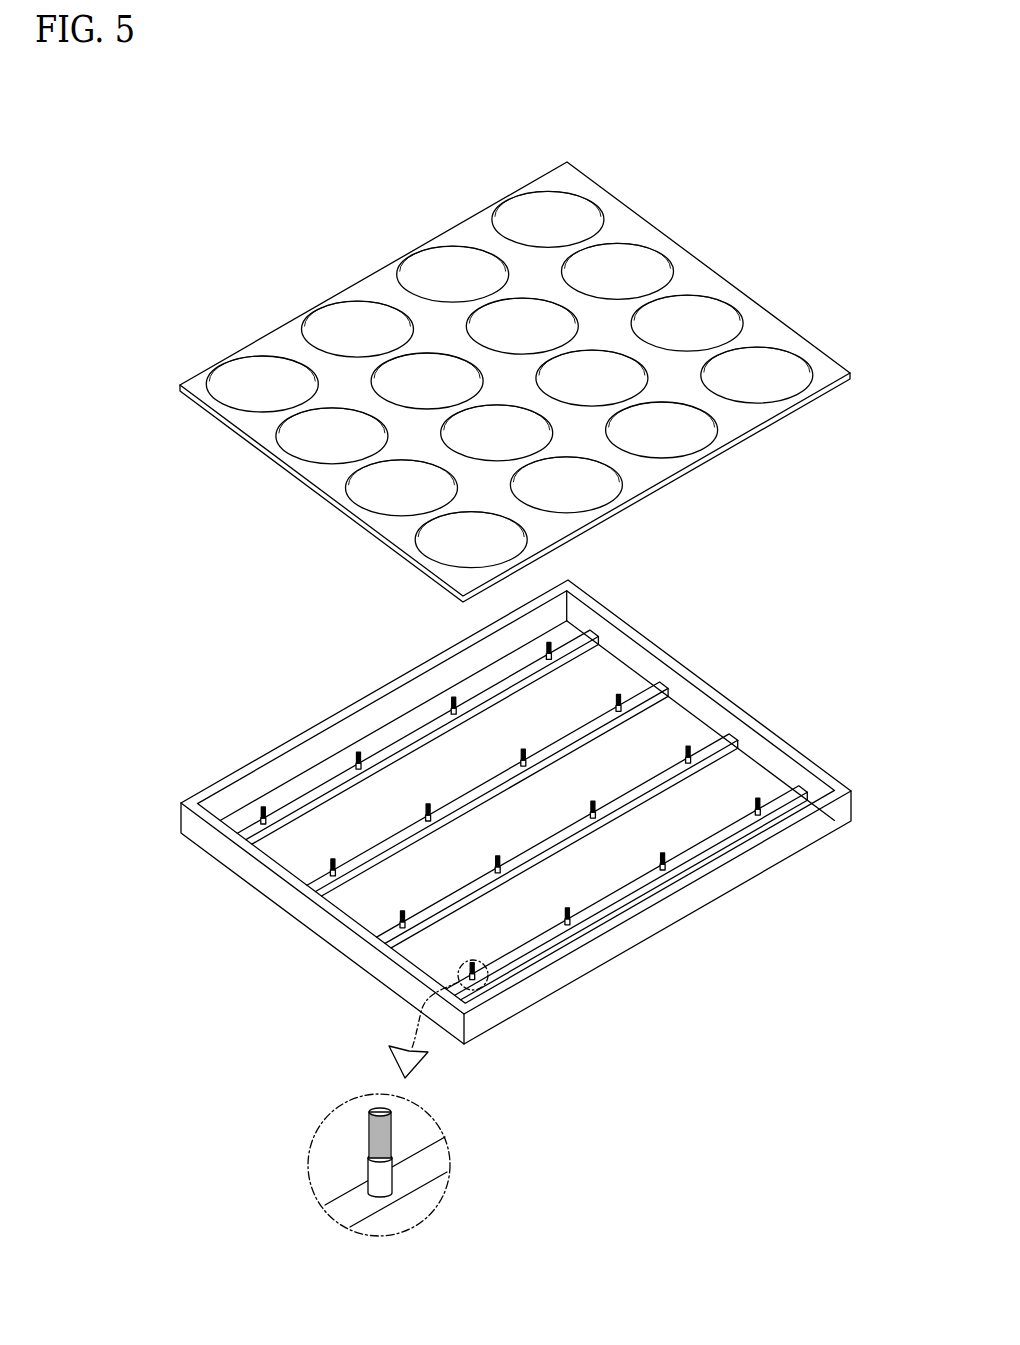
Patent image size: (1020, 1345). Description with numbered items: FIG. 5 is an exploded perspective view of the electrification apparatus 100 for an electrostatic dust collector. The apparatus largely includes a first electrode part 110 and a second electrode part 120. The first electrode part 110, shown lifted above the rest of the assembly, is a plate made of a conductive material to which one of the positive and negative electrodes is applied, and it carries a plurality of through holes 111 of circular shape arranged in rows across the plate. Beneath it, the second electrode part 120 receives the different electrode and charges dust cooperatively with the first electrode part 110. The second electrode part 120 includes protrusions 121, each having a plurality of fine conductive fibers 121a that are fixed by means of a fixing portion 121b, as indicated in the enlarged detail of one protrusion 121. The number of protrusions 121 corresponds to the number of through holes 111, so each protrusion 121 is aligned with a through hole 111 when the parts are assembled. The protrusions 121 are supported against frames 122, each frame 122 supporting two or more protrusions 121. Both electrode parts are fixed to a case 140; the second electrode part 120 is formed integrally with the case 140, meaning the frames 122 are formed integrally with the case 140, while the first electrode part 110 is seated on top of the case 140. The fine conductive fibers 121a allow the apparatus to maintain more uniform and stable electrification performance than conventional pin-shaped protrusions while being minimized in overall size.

The electrification apparatus 100 is at (784, 79).
The first electrode part 110 is at (703, 277).
The through holes 111 is at (563, 218).
The second electrode part 120 is at (723, 685).
The protrusions 121 is at (190, 1080).
The fine conductive fibers 121a is at (369, 1113).
The fixing portion 121b is at (368, 1163).
The frames 122 is at (421, 1162).
The case 140 is at (783, 850).